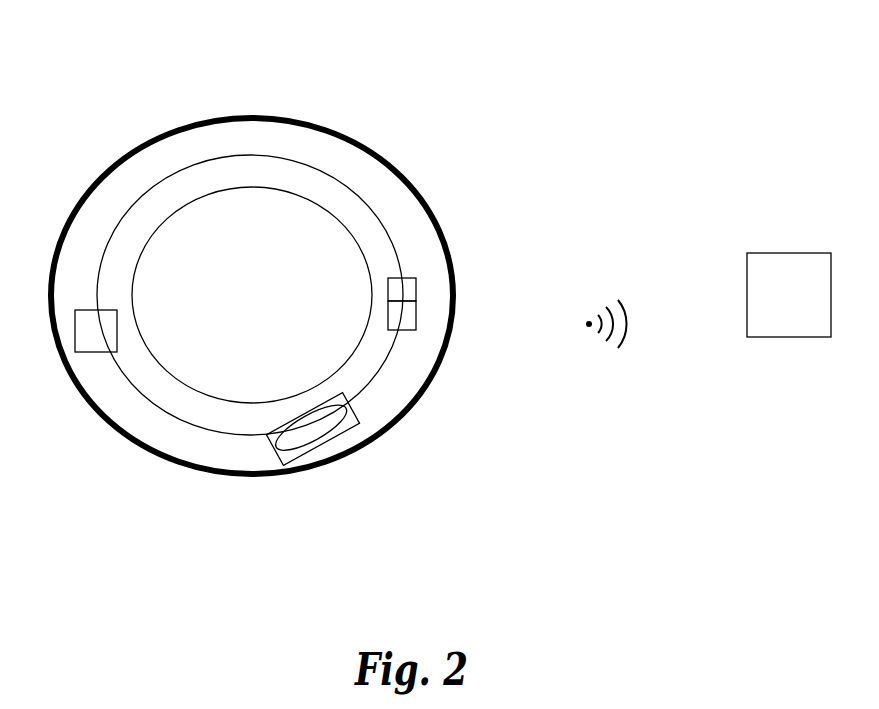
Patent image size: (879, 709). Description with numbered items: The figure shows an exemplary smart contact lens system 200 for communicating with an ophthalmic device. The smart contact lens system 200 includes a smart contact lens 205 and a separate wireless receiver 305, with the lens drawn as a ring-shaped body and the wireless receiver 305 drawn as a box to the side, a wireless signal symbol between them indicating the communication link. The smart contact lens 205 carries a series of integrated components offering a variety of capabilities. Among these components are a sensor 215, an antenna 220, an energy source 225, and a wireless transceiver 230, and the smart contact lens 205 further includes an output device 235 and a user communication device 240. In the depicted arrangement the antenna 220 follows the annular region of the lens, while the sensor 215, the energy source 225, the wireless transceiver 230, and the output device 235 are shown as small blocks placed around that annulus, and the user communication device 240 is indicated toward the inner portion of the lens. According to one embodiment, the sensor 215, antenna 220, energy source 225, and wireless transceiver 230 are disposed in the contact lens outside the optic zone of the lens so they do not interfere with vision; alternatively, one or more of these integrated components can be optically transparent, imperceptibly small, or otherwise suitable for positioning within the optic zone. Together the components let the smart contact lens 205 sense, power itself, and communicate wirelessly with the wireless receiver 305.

The smart contact lens system 200 is at (601, 108).
The smart contact lens 205 is at (81, 183).
The sensor 215 is at (327, 442).
The antenna 220 is at (305, 165).
The energy source 225 is at (410, 288).
The wireless transceiver 230 is at (405, 325).
The output device 235 is at (85, 338).
The user communication device 240 is at (343, 223).
The wireless receiver 305 is at (790, 346).